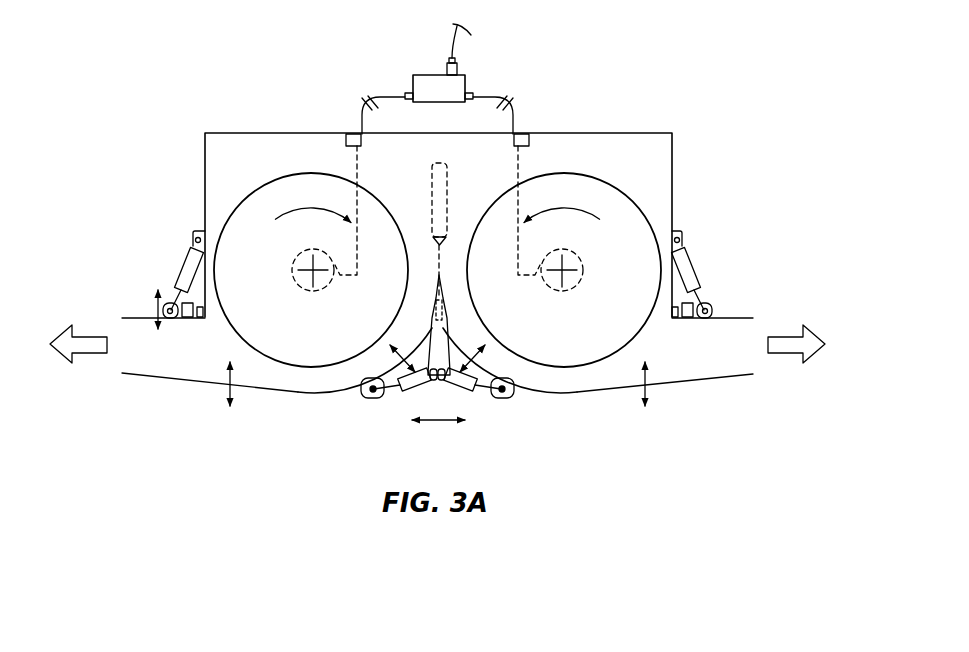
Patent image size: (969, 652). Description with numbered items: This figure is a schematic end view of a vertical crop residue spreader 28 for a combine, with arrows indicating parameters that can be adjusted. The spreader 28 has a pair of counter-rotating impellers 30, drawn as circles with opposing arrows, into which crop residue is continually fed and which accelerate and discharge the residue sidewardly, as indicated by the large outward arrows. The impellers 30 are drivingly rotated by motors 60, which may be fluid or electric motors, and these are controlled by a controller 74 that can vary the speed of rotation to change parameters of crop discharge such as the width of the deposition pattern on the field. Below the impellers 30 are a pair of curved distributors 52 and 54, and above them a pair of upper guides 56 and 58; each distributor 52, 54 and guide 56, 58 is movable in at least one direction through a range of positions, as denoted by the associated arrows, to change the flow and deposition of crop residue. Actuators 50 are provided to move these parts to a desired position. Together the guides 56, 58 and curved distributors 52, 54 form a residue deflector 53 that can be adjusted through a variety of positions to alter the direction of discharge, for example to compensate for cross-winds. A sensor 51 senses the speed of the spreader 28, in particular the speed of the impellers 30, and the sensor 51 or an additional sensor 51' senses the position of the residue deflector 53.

The spreader 28 is at (622, 70).
The counter-rotating impellers 30 is at (310, 173).
The actuators 50 is at (447, 189).
The sensor 51 is at (440, 183).
The additional sensor 51' is at (441, 339).
The curved distributor 52 is at (213, 388).
The residue deflector 53 is at (268, 396).
The curved distributor 54 is at (662, 388).
The upper guide 56 is at (136, 318).
The upper guide 58 is at (740, 318).
The motors 60 is at (313, 292).
The controller 74 is at (421, 75).